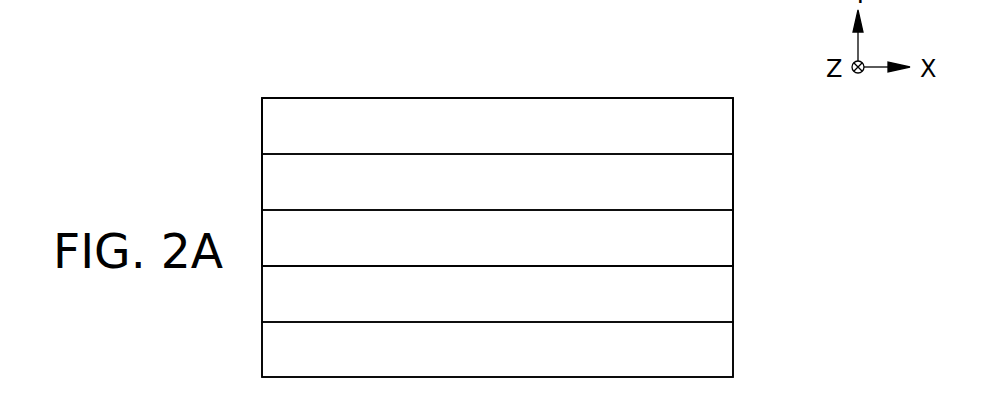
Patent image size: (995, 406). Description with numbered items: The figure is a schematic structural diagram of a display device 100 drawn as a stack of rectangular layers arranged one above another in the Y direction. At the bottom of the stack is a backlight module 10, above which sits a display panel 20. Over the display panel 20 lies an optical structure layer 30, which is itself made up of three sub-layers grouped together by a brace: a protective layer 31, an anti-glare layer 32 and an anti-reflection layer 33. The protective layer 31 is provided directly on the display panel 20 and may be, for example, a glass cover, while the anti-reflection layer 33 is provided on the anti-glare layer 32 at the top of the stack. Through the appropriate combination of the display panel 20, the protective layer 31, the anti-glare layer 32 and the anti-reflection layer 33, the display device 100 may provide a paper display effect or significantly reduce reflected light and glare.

The display device 100 is at (250, 60).
The backlight module 10 is at (727, 349).
The display panel 20 is at (727, 293).
The optical structure layer 30 is at (788, 105).
The protective layer 31 is at (727, 237).
The anti-glare layer 32 is at (727, 181).
The anti-reflection layer 33 is at (727, 125).